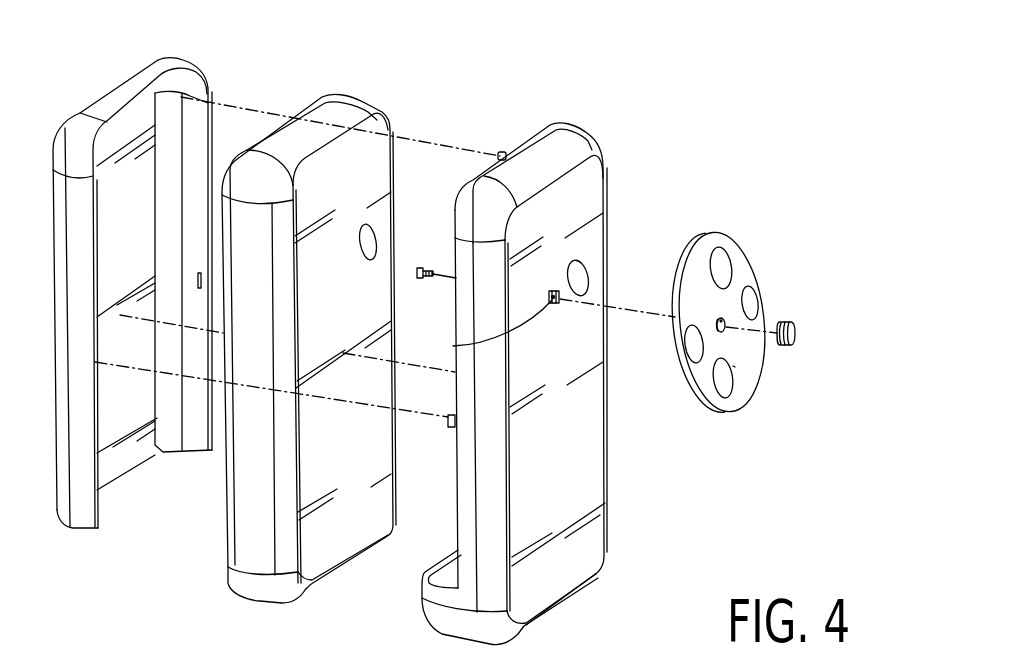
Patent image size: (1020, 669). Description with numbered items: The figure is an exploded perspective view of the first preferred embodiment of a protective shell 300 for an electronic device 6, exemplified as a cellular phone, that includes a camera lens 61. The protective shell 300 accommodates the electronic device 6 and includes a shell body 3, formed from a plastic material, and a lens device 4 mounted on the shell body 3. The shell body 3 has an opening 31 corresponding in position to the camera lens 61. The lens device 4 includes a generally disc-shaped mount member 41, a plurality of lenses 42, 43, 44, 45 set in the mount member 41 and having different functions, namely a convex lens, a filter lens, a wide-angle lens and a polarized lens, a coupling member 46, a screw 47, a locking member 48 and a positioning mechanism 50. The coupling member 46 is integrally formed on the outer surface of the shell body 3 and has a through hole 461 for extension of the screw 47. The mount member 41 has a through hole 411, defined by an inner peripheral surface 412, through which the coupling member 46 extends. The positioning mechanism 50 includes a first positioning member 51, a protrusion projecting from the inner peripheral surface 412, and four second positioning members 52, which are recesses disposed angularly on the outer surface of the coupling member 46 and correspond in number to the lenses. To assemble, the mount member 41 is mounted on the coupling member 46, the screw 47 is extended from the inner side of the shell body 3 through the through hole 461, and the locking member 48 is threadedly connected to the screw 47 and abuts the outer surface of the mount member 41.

The protective shell 300 is at (620, 113).
The electronic device 6 is at (326, 307).
The camera lens 61 is at (372, 232).
The screw 47 is at (423, 268).
The shell body 3 is at (541, 364).
The opening 31 is at (588, 280).
The positioning mechanism 50 is at (558, 285).
The second positioning members 52 is at (552, 300).
The coupling member 46 is at (453, 346).
The through hole 461 is at (560, 300).
The lens device 4 is at (727, 311).
The mount member 41 is at (735, 367).
The lens 42 is at (749, 298).
The lens 43 is at (720, 266).
The lens 44 is at (690, 360).
The lens 45 is at (723, 392).
The through hole 411 is at (726, 308).
The inner peripheral surface 412 is at (723, 333).
The first positioning member 51 is at (721, 321).
The locking member 48 is at (795, 333).